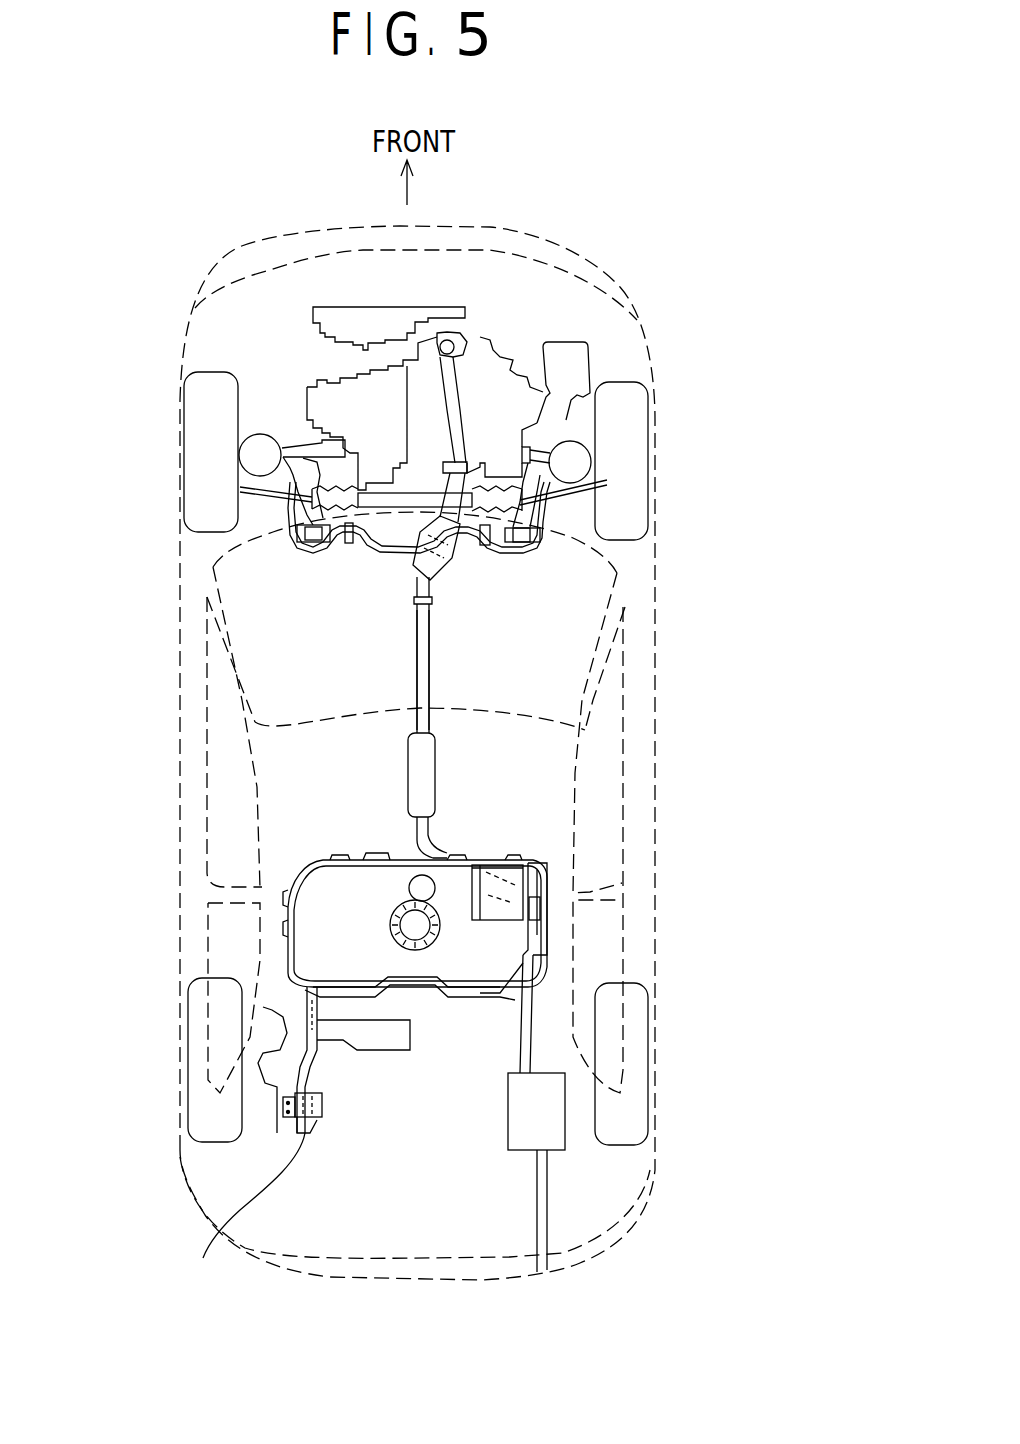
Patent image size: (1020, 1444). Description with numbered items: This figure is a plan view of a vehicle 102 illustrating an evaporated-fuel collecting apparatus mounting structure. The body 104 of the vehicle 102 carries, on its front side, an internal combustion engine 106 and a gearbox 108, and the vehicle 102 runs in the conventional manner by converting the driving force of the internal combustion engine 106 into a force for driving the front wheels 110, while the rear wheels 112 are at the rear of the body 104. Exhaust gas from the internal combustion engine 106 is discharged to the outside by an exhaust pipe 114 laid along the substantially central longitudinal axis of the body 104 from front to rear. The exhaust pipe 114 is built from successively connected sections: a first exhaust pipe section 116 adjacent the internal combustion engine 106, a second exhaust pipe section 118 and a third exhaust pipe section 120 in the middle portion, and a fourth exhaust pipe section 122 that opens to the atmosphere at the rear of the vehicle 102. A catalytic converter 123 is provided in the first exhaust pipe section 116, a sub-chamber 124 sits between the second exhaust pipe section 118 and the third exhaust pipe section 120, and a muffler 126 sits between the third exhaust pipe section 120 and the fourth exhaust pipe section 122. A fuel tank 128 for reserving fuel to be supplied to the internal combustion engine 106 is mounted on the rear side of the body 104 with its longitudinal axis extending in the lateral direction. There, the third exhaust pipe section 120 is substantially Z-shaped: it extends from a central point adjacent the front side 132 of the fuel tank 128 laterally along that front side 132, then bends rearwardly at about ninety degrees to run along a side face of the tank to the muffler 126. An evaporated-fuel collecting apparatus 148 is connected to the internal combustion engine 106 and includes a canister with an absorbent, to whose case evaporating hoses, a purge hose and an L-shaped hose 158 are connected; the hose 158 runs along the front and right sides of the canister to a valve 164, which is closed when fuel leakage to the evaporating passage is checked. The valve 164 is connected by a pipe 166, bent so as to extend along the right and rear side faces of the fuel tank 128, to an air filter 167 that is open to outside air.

The vehicle 102 is at (623, 240).
The body 104 is at (667, 606).
The internal combustion engine 106 is at (488, 337).
The gearbox 108 is at (330, 372).
The front wheels 110 is at (190, 404).
The rear wheels 112 is at (197, 1000).
The exhaust pipe 114 is at (427, 700).
The first exhaust pipe section 116 is at (480, 413).
The second exhaust pipe section 118 is at (430, 658).
The third exhaust pipe section 120 is at (527, 1020).
The fourth exhaust pipe section 122 is at (538, 1197).
The catalytic converter 123 is at (450, 562).
The sub-chamber 124 is at (432, 777).
The muffler 126 is at (517, 1118).
The fuel tank 128 is at (357, 840).
The front side 132 is at (500, 840).
The evaporated-fuel collecting apparatus 148 is at (558, 840).
The hose 158 is at (500, 870).
The valve 164 is at (533, 905).
The pipe 166 is at (422, 1000).
The air filter 167 is at (242, 1191).